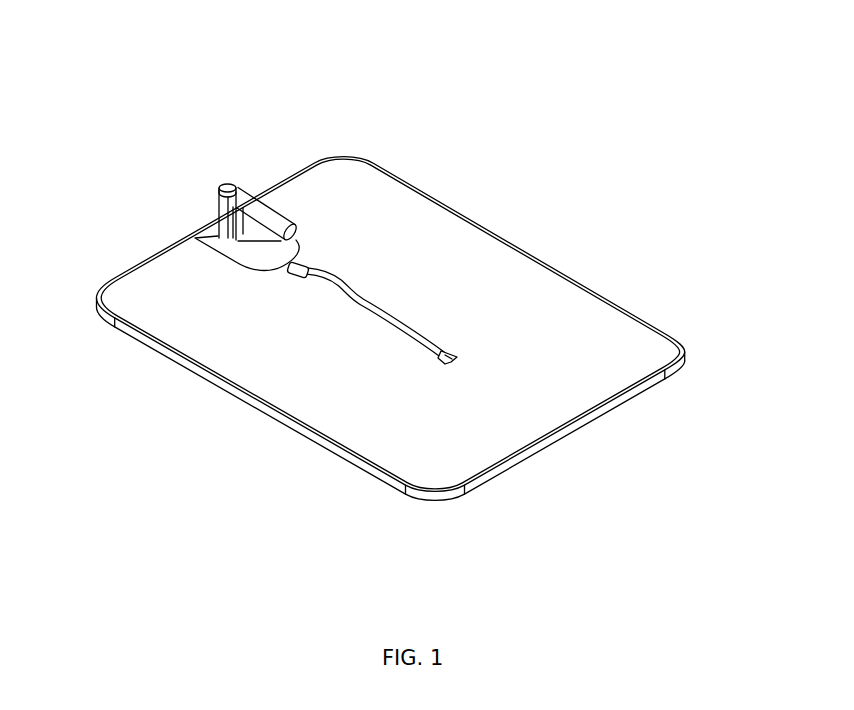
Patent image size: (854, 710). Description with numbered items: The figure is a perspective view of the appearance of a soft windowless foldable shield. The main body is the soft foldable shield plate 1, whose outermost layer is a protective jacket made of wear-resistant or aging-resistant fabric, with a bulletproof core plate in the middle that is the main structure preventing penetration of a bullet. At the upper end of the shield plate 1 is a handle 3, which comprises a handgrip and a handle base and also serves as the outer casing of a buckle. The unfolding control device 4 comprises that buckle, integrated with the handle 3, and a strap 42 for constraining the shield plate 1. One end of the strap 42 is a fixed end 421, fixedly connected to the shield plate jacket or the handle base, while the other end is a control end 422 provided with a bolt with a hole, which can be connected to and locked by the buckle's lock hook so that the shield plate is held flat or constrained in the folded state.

The soft foldable shield plate 1 is at (390, 329).
The handle 3 is at (247, 253).
The unfolding control device 4 is at (221, 222).
The strap 42 is at (352, 298).
The fixed end 421 is at (305, 268).
The control end 422 is at (437, 343).